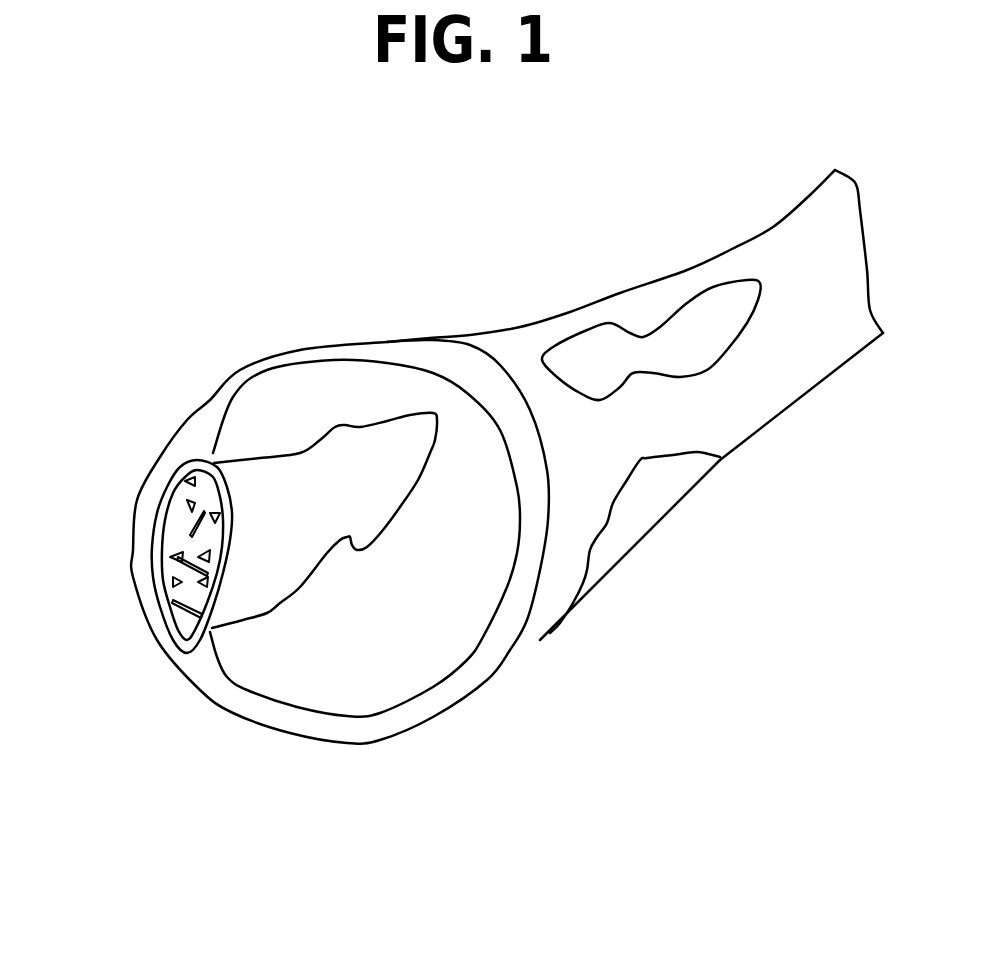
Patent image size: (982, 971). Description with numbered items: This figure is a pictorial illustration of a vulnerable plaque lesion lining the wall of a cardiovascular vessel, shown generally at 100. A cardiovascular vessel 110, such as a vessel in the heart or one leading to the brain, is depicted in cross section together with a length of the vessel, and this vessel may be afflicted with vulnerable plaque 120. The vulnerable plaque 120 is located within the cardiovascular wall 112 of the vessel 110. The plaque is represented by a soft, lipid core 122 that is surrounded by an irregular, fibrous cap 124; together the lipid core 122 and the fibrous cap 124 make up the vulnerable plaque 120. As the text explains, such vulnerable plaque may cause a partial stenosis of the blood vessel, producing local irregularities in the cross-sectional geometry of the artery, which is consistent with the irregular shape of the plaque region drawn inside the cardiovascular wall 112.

The vulnerable plaque lesion illustration 100 is at (207, 286).
The cardiovascular vessel 110 is at (766, 430).
The cardiovascular wall 112 is at (380, 713).
The vulnerable plaque 120 is at (260, 617).
The lipid core 122 is at (188, 504).
The fibrous cap 124 is at (175, 464).